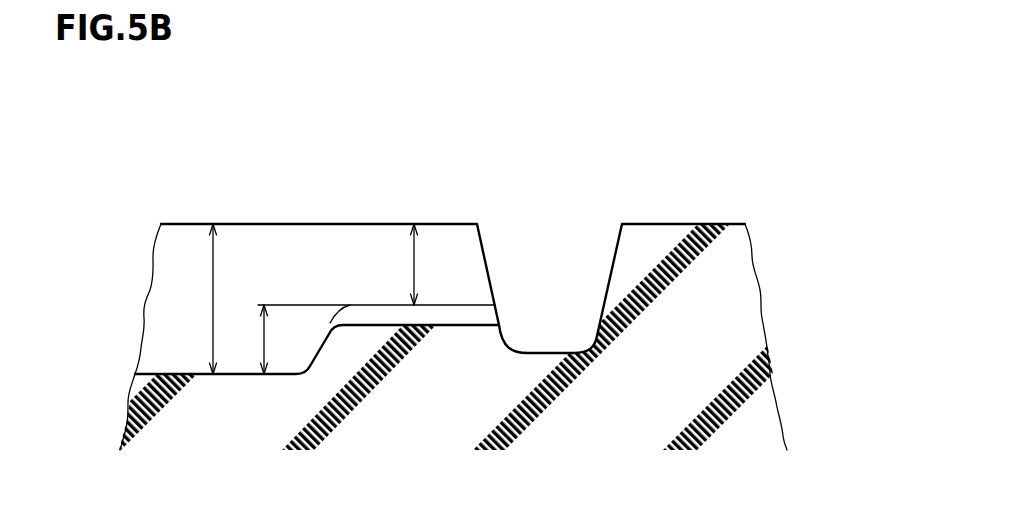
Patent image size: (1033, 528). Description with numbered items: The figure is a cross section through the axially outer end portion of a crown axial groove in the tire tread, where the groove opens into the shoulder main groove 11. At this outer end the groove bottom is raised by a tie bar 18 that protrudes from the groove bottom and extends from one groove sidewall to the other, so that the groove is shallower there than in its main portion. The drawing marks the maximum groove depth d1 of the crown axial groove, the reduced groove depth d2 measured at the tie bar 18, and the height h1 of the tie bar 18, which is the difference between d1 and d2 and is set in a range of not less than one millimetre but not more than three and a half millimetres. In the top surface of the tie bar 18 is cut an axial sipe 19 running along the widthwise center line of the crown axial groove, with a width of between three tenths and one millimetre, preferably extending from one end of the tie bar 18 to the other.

The shoulder main groove 11 is at (543, 232).
The tie bar 18 is at (357, 293).
The axial sipe 19 is at (459, 318).
The maximum groove depth d1 is at (213, 299).
The groove depth at the tie bar d2 is at (396, 264).
The height of the tie bar h1 is at (250, 339).